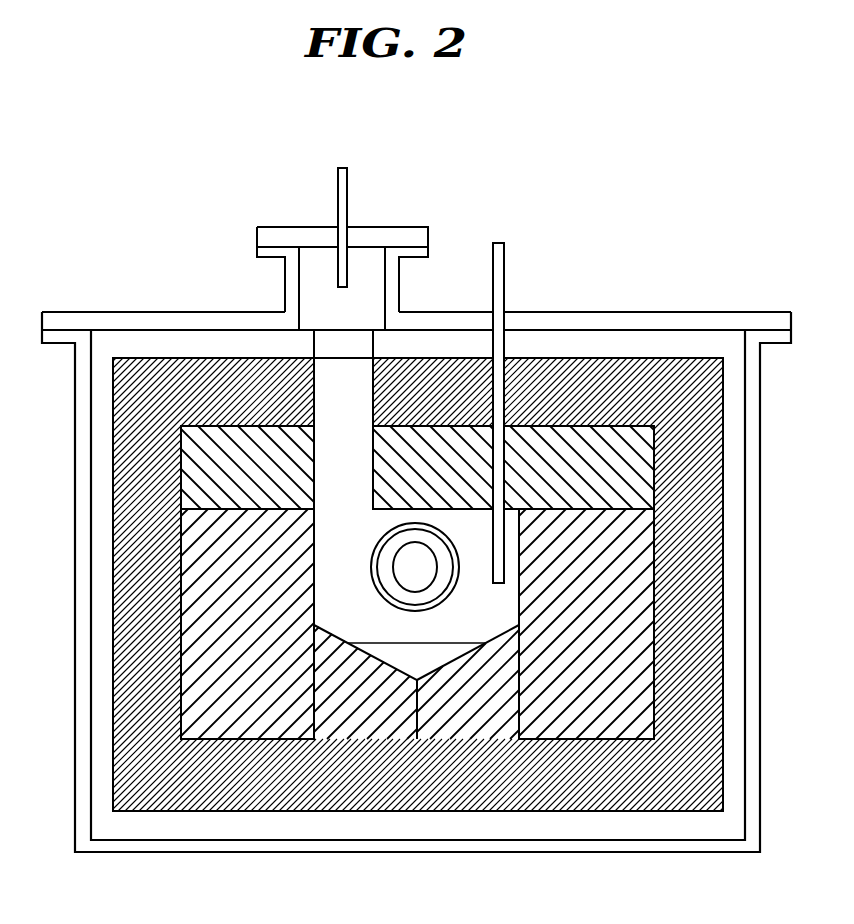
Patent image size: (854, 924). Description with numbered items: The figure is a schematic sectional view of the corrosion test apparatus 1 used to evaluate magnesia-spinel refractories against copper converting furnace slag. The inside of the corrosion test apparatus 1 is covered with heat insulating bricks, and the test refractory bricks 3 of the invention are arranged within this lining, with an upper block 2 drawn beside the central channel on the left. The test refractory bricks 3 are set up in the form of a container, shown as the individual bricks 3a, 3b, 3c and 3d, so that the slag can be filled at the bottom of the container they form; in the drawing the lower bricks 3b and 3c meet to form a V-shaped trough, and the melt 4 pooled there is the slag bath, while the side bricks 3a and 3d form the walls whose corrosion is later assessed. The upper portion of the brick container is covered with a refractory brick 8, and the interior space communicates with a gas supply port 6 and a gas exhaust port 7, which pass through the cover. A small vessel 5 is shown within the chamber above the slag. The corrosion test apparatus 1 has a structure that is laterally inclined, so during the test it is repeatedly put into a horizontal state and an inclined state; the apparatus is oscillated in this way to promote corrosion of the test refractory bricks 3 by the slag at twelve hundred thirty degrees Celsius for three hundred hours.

The corrosion test apparatus 1 is at (77, 587).
The upper heat insulating block 2 is at (200, 473).
The test refractory bricks 3 is at (419, 657).
The test refractory brick 3a is at (210, 683).
The test refractory brick 3b is at (370, 720).
The test refractory brick 3c is at (488, 718).
The test refractory brick 3d is at (632, 693).
The melt in V-shaped recess 4 is at (405, 657).
The crucible 5 is at (438, 597).
The gas supply port 6 is at (505, 260).
The gas exhaust port 7 is at (348, 183).
The refractory brick 8 is at (630, 465).